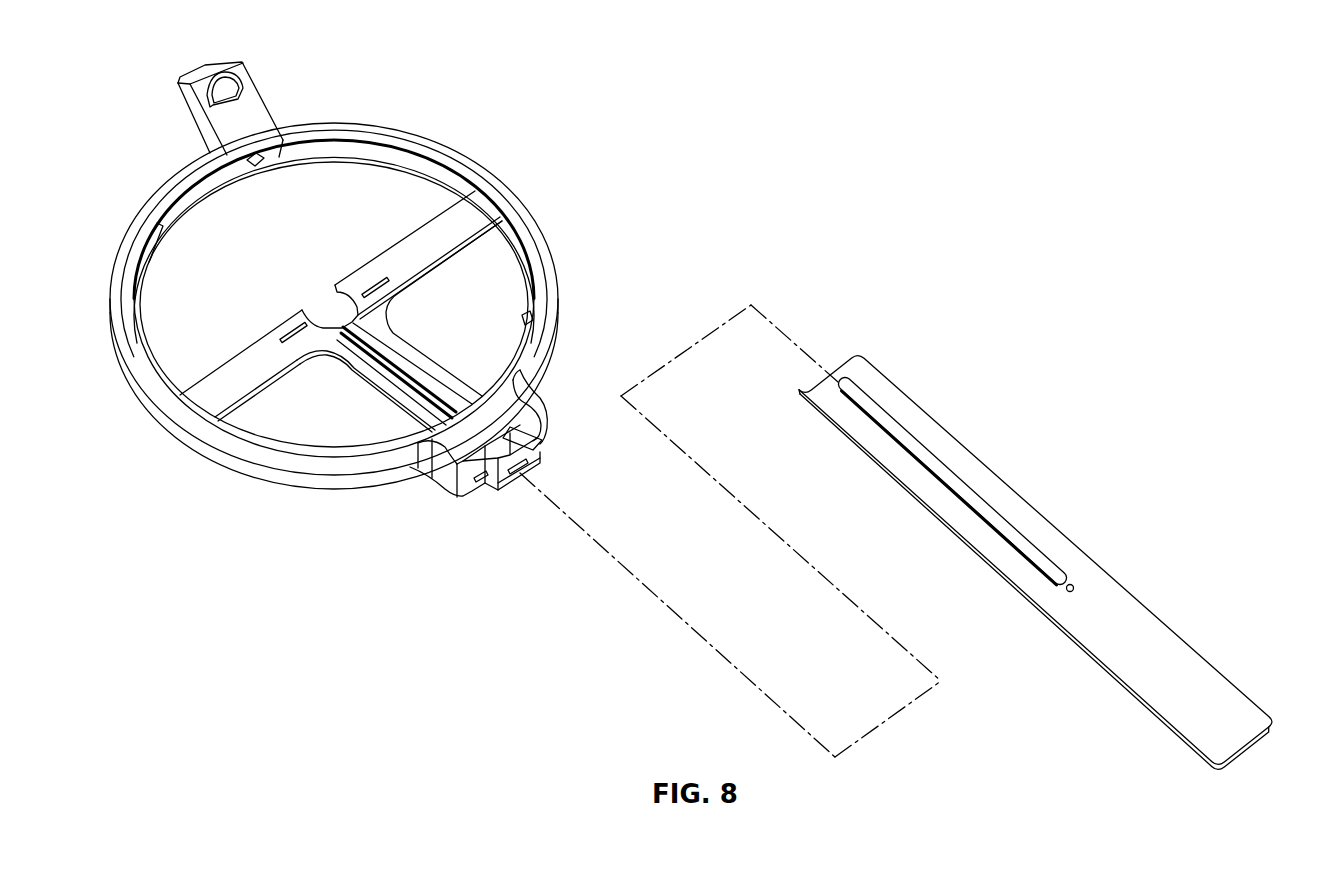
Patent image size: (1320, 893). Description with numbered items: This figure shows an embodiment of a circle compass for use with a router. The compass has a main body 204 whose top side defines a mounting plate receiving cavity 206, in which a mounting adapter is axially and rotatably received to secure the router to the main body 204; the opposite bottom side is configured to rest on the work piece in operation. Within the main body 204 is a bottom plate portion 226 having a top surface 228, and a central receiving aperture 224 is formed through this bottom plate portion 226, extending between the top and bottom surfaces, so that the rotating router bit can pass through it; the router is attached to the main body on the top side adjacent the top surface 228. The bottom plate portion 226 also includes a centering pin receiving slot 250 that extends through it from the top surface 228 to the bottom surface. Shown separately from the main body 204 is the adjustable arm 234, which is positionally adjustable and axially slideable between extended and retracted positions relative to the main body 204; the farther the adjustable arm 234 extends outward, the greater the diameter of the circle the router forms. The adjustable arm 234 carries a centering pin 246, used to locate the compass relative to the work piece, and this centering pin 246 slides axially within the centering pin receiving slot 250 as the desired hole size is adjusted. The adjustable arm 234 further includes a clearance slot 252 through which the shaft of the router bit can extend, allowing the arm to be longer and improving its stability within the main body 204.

The main body 204 is at (391, 137).
The mounting plate receiving cavity 206 is at (447, 172).
The central receiving aperture 224 is at (316, 282).
The bottom plate portion 226 is at (227, 377).
The top surface 228 is at (240, 389).
The centering pin receiving slot 250 is at (427, 350).
The adjustable arm 234 is at (1180, 670).
The clearance slot 252 is at (967, 452).
The centering pin 246 is at (1075, 586).